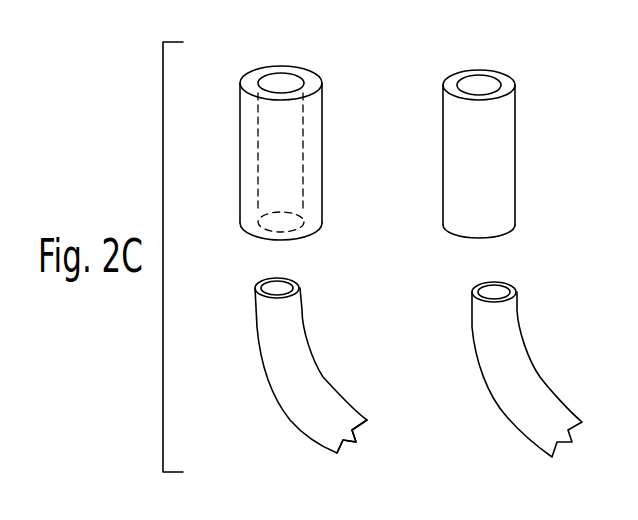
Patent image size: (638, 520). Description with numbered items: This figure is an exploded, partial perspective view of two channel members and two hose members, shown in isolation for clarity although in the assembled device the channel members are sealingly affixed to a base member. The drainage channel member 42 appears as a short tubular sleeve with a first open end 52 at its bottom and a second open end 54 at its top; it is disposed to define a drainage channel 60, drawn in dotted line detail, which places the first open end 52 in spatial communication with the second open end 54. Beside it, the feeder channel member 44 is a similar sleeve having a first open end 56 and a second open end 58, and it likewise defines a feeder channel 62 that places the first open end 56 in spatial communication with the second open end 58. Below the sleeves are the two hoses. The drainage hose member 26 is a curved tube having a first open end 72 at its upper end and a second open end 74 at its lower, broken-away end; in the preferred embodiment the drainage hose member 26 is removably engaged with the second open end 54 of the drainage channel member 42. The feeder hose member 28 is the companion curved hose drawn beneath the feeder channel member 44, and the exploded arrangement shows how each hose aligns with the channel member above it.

The drainage hose member 26 is at (319, 390).
The feeder hose member 28 is at (544, 368).
The drainage channel member 42 is at (282, 154).
The feeder channel member 44 is at (510, 122).
The first open end 52 is at (322, 223).
The second open end 54 is at (323, 83).
The first open end 56 is at (515, 227).
The second open end 58 is at (515, 84).
The drainage channel 60 is at (322, 158).
The feeder channel 62 is at (481, 62).
The first open end 72 is at (301, 290).
The second open end 74 is at (327, 448).